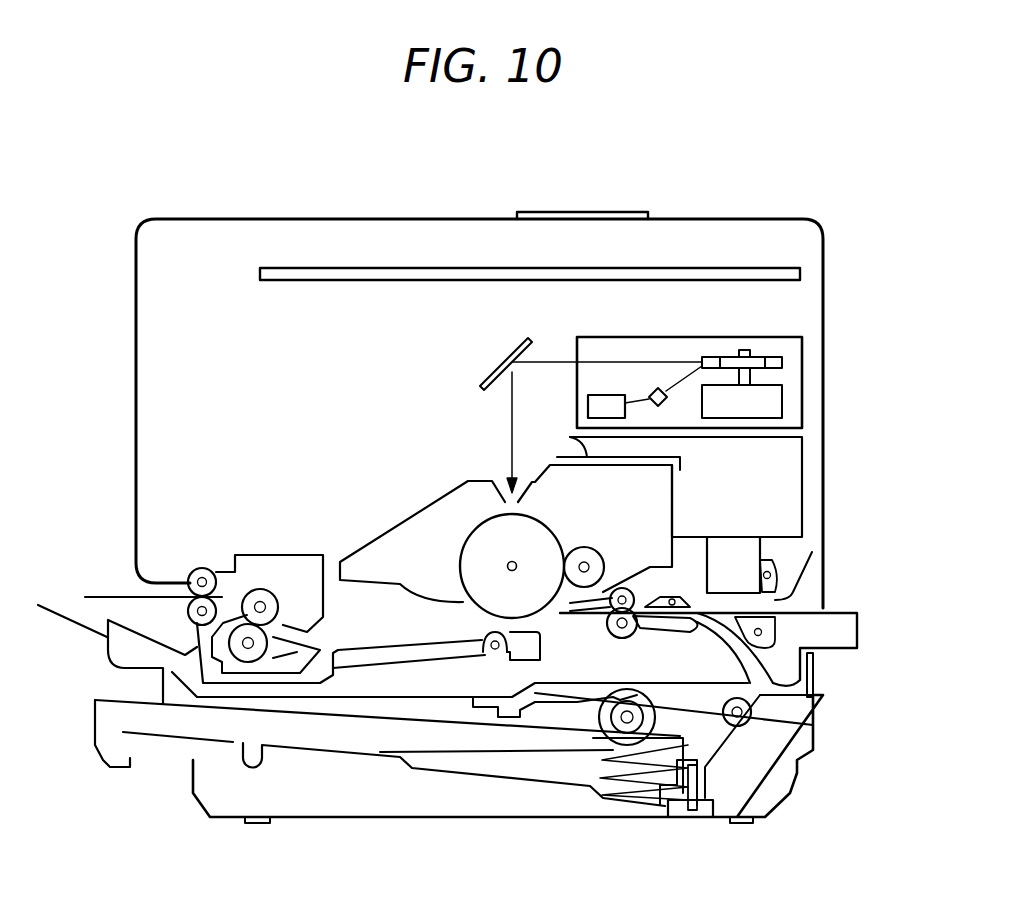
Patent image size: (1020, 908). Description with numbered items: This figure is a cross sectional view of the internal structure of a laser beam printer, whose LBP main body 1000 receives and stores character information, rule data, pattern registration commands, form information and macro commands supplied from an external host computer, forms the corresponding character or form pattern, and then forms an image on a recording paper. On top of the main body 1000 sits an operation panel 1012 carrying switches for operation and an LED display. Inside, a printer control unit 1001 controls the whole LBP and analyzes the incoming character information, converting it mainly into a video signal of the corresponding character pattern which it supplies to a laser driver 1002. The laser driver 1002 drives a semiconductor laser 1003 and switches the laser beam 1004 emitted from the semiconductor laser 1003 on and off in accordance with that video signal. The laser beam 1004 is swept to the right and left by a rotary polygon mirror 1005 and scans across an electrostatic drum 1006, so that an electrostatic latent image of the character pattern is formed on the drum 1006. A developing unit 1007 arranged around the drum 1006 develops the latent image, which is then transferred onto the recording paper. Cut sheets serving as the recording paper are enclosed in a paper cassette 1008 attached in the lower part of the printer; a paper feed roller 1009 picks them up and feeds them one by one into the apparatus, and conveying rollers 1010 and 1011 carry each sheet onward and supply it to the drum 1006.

The LBP main body 1000 is at (745, 218).
The printer control unit 1001 is at (800, 274).
The laser driver 1002 is at (588, 402).
The semiconductor laser 1003 is at (670, 400).
The laser beam 1004 is at (638, 360).
The rotary polygon mirror 1005 is at (782, 362).
The electrostatic drum 1006 is at (478, 523).
The developing unit 1007 is at (372, 550).
The paper cassette 1008 is at (92, 752).
The paper feed roller 1009 is at (600, 718).
The conveying roller 1010 is at (753, 713).
The conveying roller 1011 is at (617, 645).
The operation panel 1012 is at (598, 210).